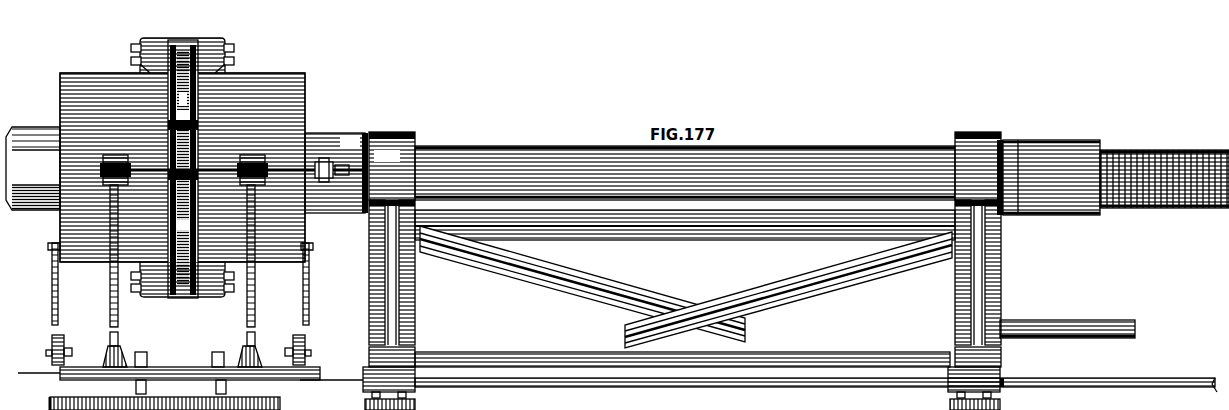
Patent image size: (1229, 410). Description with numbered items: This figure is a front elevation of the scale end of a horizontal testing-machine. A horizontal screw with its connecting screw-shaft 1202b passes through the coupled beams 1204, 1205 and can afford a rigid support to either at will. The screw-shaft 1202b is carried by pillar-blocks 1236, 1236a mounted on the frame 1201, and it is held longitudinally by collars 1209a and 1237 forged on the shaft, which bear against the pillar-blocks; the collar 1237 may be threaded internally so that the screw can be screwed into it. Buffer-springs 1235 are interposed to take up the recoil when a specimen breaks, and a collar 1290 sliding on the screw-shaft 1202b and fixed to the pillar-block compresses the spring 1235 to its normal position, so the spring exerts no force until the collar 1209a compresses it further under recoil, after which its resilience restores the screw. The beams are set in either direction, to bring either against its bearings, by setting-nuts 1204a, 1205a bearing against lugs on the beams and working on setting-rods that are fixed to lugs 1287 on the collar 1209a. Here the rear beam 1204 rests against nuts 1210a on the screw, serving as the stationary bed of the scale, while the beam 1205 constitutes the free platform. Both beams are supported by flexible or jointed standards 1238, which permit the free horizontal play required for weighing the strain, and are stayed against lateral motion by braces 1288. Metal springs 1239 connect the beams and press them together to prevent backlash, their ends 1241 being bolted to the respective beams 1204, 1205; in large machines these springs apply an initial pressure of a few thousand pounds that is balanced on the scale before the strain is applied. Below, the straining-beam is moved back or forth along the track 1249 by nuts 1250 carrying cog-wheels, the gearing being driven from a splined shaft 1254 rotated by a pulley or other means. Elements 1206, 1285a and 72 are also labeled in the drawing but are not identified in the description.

The frame 1201 is at (685, 288).
The screw-shaft 1202b is at (685, 168).
The rear beam 1204 is at (115, 167).
The setting-nut 1204a is at (131, 167).
The beam 1205 is at (250, 167).
The setting-nut 1205a is at (252, 170).
The shaft 1206 is at (232, 163).
The collar 1209a is at (336, 164).
The nut 1210a is at (33, 168).
The buffer-spring 1235 is at (710, 165).
The pillar-block 1236 is at (974, 264).
The pillar-block 1236a is at (389, 263).
The collar 1237 is at (1113, 170).
The flexible or jointed standard 1238 is at (195, 276).
The metal spring 1239 is at (182, 168).
The spring end 1241 is at (198, 169).
The track 1249 is at (816, 379).
The nut 1250 is at (186, 99).
The splined shaft 1254 is at (1067, 323).
The collar 1285a is at (350, 174).
The lug 1287 is at (329, 166).
The brace 1288 is at (193, 304).
The collar 1290 is at (692, 150).
The base 72 is at (1009, 393).